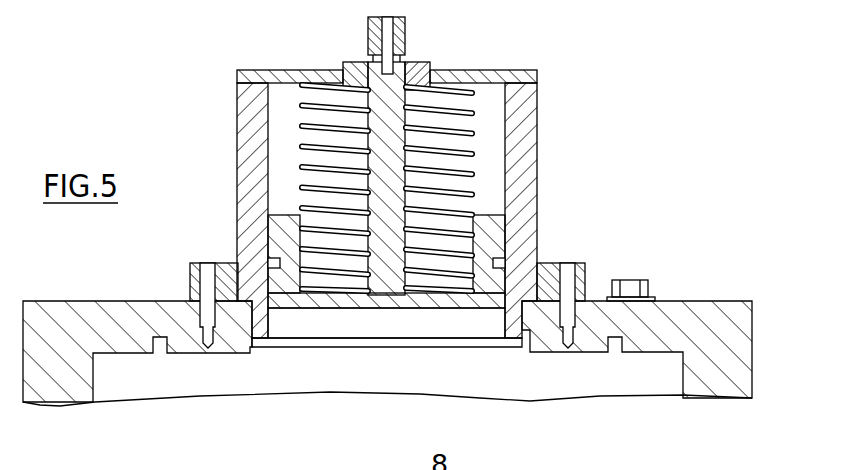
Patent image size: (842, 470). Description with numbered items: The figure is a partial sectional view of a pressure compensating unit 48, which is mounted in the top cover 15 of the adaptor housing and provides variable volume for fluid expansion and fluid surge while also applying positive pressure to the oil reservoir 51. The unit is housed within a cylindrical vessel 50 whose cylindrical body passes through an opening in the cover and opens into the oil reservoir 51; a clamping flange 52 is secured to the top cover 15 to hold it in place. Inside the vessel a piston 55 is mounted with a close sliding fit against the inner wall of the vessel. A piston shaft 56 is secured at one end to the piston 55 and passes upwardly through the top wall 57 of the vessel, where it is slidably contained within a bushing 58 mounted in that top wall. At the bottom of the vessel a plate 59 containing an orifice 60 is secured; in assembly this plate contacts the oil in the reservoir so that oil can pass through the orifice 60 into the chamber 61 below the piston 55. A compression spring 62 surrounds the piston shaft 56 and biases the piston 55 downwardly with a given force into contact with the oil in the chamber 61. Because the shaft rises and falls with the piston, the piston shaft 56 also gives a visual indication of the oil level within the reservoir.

The top cover 15 is at (693, 301).
The compensating unit 48 is at (545, 63).
The cylindrical vessel 50 is at (540, 180).
The oil reservoir 51 is at (205, 382).
The clamping flange 52 is at (237, 282).
The piston 55 is at (512, 331).
The piston shaft 56 is at (410, 158).
The top wall 57 is at (300, 70).
The bushing 58 is at (418, 62).
The plate 59 is at (362, 347).
The orifice 60 is at (387, 347).
The chamber 61 is at (305, 327).
The compression spring 62 is at (302, 128).